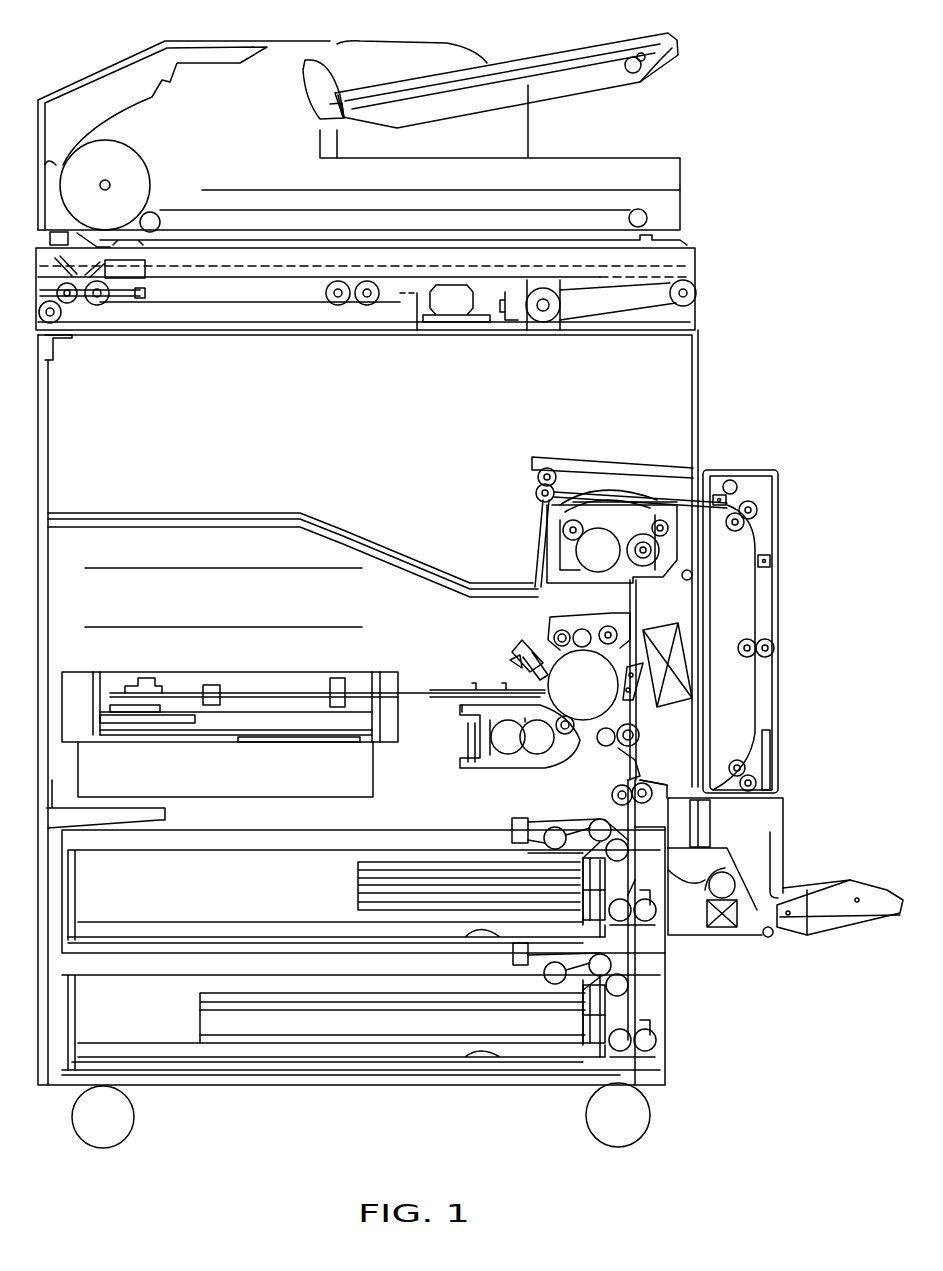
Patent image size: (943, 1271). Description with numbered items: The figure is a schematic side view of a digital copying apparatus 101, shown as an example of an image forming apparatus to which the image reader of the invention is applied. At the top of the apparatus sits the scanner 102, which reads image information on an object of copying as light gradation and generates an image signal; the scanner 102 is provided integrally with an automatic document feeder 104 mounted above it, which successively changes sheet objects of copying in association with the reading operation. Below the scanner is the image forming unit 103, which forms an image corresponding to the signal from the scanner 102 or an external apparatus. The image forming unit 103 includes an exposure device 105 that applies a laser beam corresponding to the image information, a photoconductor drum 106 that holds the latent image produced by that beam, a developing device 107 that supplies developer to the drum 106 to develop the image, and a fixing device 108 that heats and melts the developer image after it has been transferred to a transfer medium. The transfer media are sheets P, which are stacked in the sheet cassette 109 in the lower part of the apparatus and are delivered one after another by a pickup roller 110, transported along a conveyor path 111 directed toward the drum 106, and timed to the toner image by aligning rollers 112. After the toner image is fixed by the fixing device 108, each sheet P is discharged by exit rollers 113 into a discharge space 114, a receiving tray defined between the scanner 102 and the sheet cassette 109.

The digital copying apparatus 101 is at (658, 415).
The scanner 102 is at (185, 293).
The image forming unit 103 is at (785, 470).
The automatic document feeder 104 is at (152, 97).
The exposure device 105 is at (160, 690).
The photoconductor drum 106 is at (632, 613).
The developing device 107 is at (537, 748).
The fixing device 108 is at (593, 507).
The sheet cassette 109 is at (333, 857).
The pickup roller 110 is at (553, 827).
The conveyor path 111 is at (653, 813).
The aligning rollers 112 is at (604, 743).
The exit rollers 113 is at (538, 478).
The discharge space 114 is at (243, 512).
The sheet P is at (450, 870).